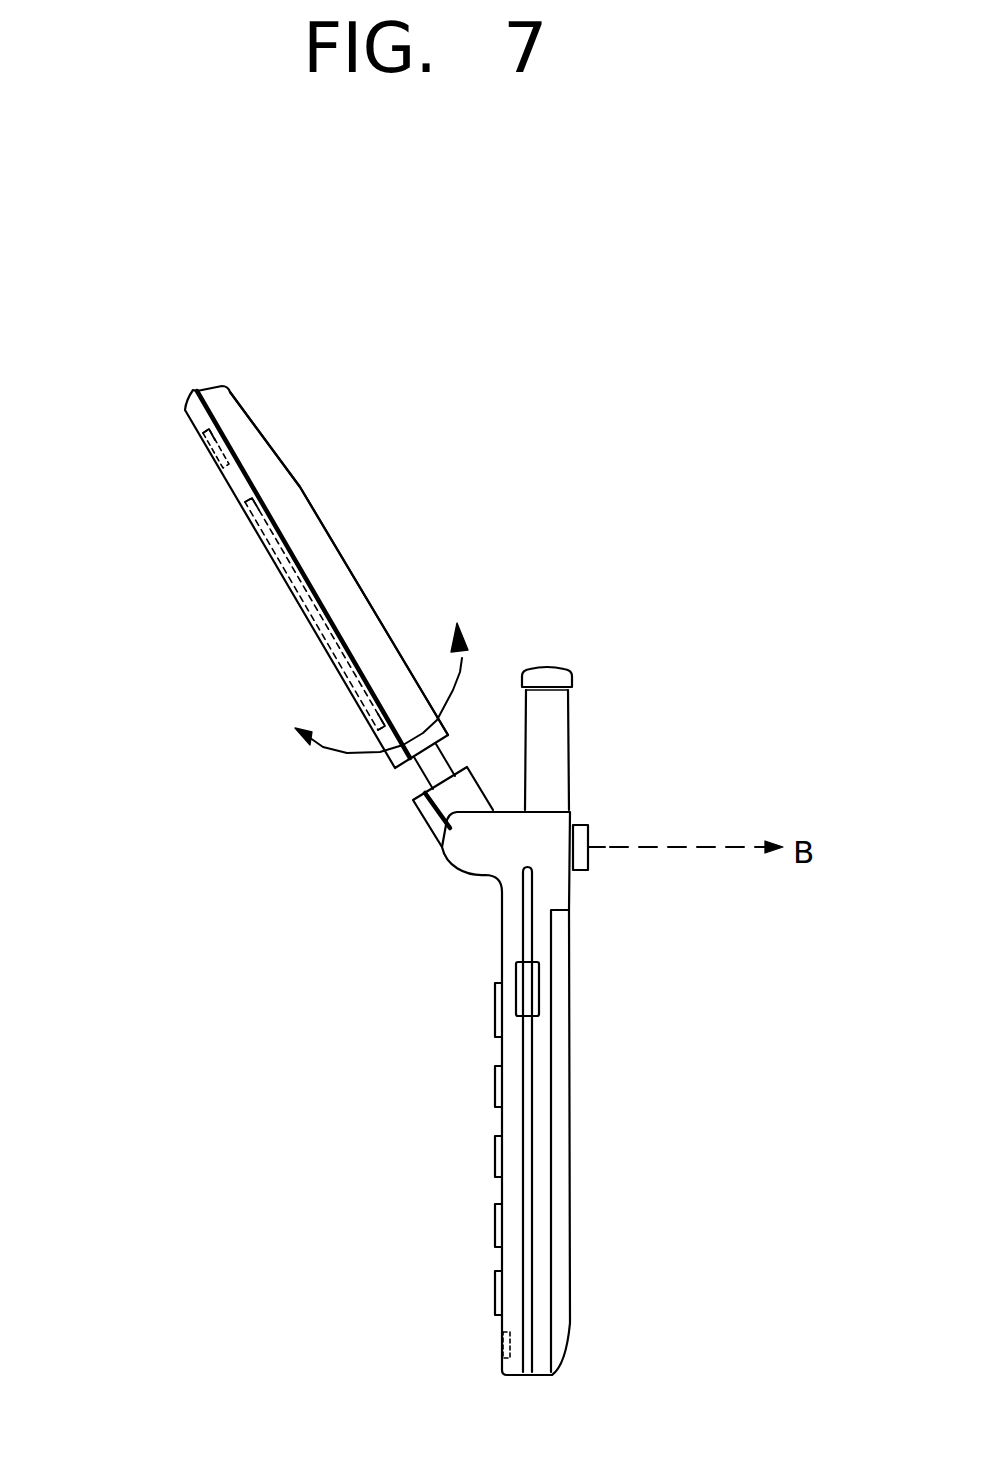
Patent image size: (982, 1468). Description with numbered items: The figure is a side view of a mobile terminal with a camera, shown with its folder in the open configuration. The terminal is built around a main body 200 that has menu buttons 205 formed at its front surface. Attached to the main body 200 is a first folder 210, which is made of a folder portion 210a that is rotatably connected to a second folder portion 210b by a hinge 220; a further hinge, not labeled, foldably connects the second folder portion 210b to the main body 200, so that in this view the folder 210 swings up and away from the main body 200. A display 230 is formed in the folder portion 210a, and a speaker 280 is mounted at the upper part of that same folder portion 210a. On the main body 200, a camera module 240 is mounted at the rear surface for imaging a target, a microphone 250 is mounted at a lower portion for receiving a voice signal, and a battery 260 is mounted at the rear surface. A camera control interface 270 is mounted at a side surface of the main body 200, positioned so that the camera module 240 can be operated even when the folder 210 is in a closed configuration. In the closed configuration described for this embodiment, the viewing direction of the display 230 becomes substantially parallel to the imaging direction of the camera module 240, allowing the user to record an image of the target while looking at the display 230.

The main body 200 is at (512, 1190).
The menu buttons 205 is at (495, 1088).
The first folder 210 is at (321, 454).
The folder portion 210a is at (337, 566).
The second folder portion 210b is at (481, 787).
The hinge 220 is at (414, 779).
The display 230 is at (260, 525).
The camera module 240 is at (588, 824).
The microphone 250 is at (503, 1343).
The battery 260 is at (560, 1113).
The camera control interface 270 is at (525, 990).
The speaker 280 is at (207, 445).